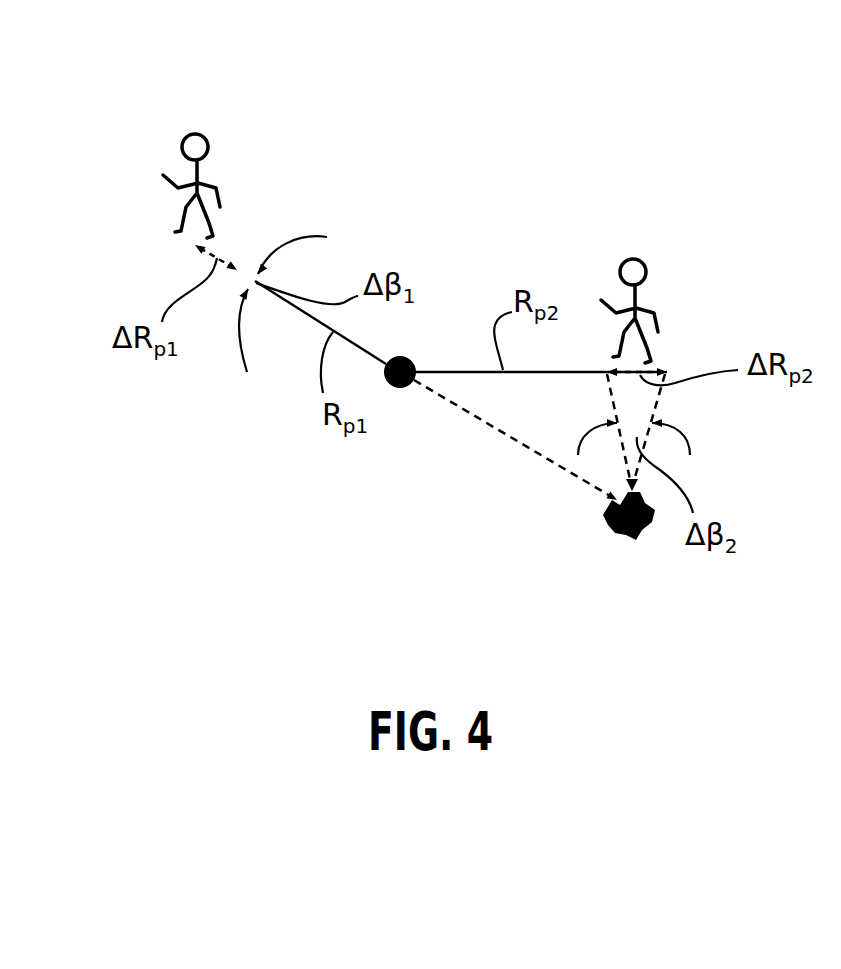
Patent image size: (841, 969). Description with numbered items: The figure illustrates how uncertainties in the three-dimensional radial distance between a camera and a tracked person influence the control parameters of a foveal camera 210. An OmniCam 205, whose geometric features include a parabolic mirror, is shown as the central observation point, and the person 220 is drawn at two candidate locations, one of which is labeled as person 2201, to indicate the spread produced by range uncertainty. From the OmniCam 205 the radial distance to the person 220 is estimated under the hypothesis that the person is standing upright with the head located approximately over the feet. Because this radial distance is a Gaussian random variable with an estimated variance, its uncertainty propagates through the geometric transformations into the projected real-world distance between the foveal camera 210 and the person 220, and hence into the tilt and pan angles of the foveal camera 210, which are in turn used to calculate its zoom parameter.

The OmniCam 205 is at (401, 388).
The foveal camera 210 is at (638, 540).
The person 220 is at (645, 259).
The person (first position) 2201 is at (203, 133).